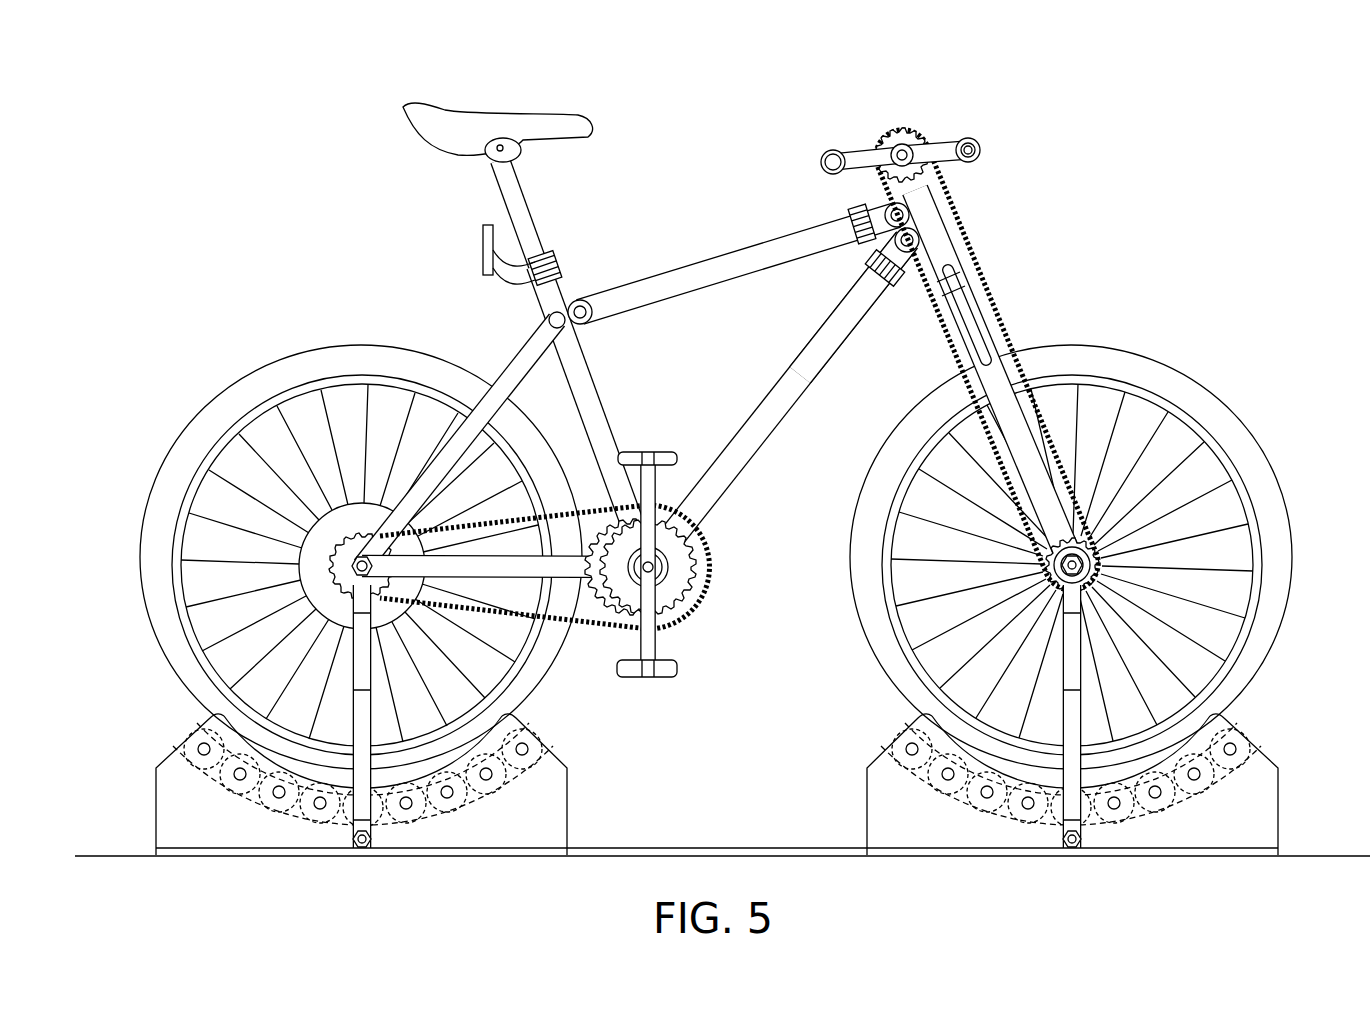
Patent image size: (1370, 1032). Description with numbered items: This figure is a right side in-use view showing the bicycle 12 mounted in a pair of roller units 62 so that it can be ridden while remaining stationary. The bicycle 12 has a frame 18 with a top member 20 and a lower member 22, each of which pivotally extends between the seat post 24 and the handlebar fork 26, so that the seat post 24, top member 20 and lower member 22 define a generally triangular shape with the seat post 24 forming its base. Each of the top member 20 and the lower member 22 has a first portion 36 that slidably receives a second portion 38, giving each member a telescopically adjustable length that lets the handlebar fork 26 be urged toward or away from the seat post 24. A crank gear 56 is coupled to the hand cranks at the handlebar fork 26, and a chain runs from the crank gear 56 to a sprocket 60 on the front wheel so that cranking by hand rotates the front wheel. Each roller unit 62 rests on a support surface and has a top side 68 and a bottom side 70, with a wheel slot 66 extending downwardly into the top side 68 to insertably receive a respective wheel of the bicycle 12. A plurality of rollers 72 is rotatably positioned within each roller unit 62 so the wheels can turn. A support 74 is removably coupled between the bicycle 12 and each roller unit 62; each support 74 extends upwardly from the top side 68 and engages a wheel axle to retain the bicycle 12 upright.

The bicycle 12 is at (716, 392).
The frame 18 is at (717, 311).
The top member 20 is at (790, 234).
The lower member 22 is at (777, 403).
The seat post 24 is at (545, 388).
The handlebar fork 26 is at (933, 233).
The first portion 36 is at (797, 362).
The second portion 38 is at (905, 300).
The crank gear 56 is at (903, 128).
The sprocket 60 is at (1080, 520).
The roller unit 62 is at (722, 742).
The wheel slot 66 is at (477, 728).
The top side 68 is at (243, 722).
The bottom side 70 is at (208, 856).
The rollers 72 is at (460, 810).
The support 74 is at (372, 780).